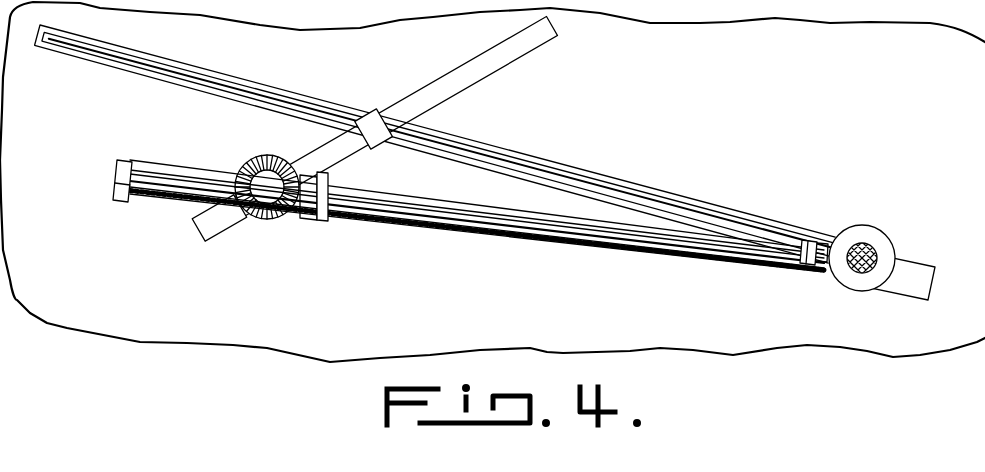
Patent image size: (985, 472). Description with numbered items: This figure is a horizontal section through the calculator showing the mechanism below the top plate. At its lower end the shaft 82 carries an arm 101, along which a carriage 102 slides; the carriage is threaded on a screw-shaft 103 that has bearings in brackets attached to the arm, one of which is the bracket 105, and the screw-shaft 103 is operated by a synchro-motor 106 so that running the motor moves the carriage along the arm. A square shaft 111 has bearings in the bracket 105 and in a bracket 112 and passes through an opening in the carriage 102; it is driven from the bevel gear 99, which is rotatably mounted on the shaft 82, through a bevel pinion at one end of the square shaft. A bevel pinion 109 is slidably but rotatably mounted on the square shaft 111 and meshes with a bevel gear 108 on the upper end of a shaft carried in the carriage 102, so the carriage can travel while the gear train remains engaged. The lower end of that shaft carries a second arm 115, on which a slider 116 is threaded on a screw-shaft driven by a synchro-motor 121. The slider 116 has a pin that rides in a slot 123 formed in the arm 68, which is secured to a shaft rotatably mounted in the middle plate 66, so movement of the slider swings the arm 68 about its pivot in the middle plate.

The middle plate 66 is at (87, 327).
The arm 68 is at (555, 167).
The shaft 82 is at (858, 242).
The bevel gear 99 is at (842, 275).
The arm 101 is at (443, 202).
The carriage 102 is at (322, 215).
The screw-shaft 103 is at (445, 228).
The bracket 105 is at (122, 175).
The synchro-motor 106 is at (915, 270).
The bevel gear 108 is at (260, 155).
The bevel pinion 109 is at (305, 217).
The square shaft 111 is at (560, 245).
The bracket 112 is at (807, 240).
The arm 115 is at (487, 70).
The slider 116 is at (373, 113).
The synchro-motor 121 is at (212, 225).
The slot 123 is at (268, 97).